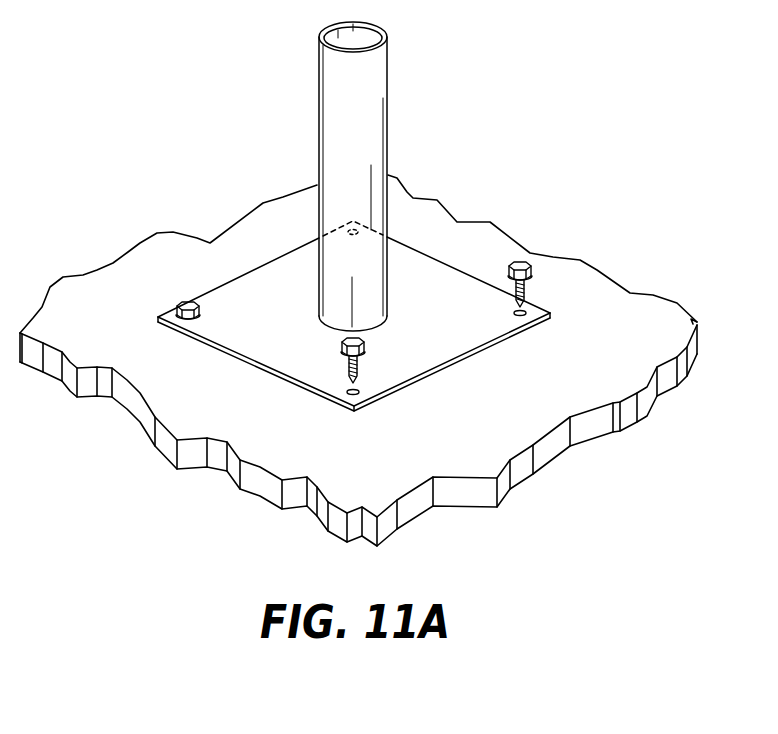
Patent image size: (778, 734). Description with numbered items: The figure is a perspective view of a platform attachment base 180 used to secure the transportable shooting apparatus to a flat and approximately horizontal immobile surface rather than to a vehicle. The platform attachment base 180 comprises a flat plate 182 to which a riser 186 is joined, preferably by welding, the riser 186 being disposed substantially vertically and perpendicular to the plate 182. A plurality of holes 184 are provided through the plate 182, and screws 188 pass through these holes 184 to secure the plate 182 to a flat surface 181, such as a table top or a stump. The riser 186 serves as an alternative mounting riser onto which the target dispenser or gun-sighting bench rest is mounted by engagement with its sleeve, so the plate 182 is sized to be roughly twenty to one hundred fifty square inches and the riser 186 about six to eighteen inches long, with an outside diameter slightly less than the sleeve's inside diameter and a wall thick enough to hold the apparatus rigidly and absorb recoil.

The platform attachment base 180 is at (285, 135).
The flat surface 181 is at (112, 278).
The flat plate 182 is at (260, 285).
The holes 184 is at (533, 307).
The riser 186 is at (388, 88).
The screws 188 is at (528, 282).